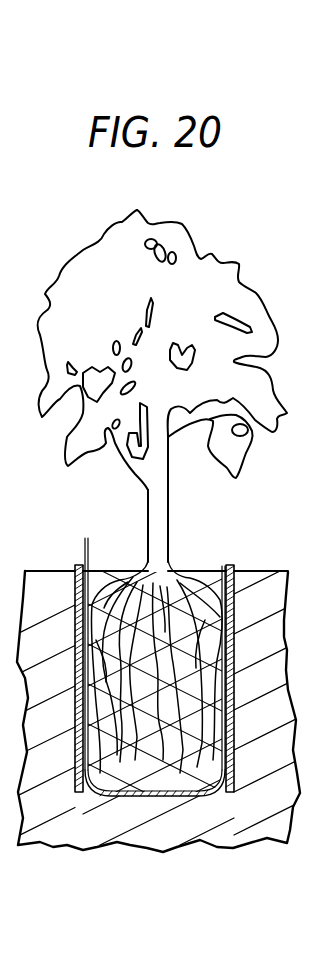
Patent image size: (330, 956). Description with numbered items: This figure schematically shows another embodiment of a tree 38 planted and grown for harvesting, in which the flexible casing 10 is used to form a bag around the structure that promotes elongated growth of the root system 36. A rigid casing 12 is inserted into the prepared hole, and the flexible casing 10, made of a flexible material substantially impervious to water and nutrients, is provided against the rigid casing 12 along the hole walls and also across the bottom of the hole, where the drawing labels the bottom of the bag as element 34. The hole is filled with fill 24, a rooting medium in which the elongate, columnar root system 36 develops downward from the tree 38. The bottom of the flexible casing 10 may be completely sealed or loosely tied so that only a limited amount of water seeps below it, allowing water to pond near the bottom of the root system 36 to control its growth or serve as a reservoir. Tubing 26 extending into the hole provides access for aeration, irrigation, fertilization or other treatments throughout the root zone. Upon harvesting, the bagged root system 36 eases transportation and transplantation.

The flexible casing 10 is at (88, 572).
The rigid casing 12 is at (76, 561).
The fill 24 is at (122, 785).
The tubing 26 is at (88, 545).
The liner bottom 34 is at (145, 796).
The root system 36 is at (213, 662).
The tree 38 is at (168, 512).